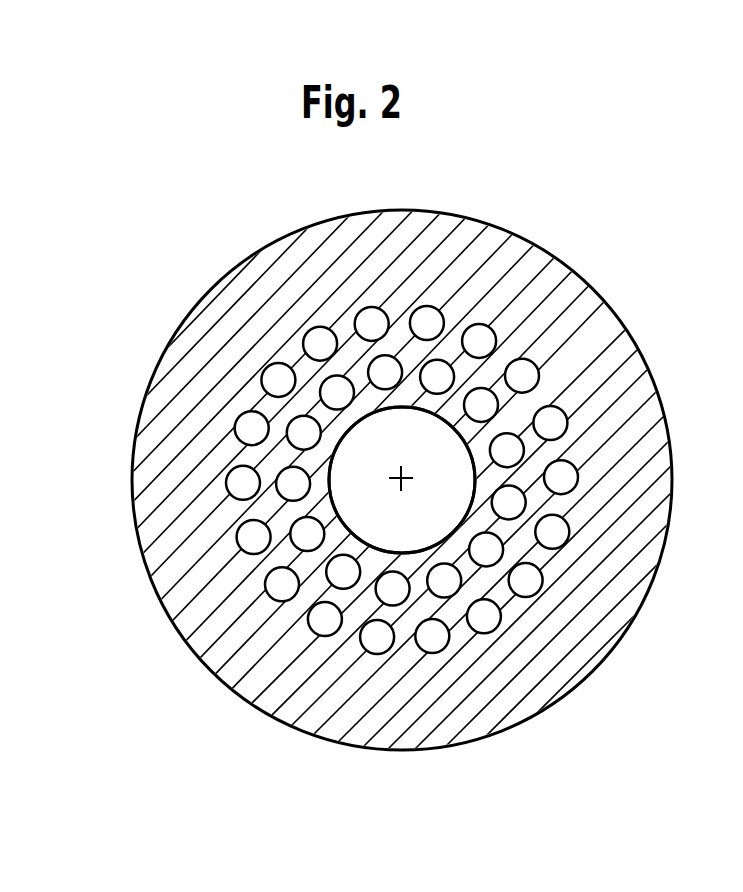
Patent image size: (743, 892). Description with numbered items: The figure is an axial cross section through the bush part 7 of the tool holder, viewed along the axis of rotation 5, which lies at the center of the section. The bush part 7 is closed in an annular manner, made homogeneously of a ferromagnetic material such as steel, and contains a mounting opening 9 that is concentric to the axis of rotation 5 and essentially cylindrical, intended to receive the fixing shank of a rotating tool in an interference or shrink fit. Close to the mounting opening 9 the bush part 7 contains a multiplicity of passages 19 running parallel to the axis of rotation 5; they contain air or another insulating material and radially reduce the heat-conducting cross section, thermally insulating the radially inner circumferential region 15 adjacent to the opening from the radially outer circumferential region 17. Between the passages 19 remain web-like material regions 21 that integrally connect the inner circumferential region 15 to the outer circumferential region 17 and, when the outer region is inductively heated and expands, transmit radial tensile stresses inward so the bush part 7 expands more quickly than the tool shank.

The axis of rotation 5 is at (405, 486).
The bush part 7 is at (563, 260).
The mounting opening 9 is at (376, 410).
The radially inner circumferential region 15 is at (355, 549).
The radially outer circumferential region 17 is at (243, 628).
The passages 19 is at (510, 450).
The web-like material regions 21 is at (403, 635).